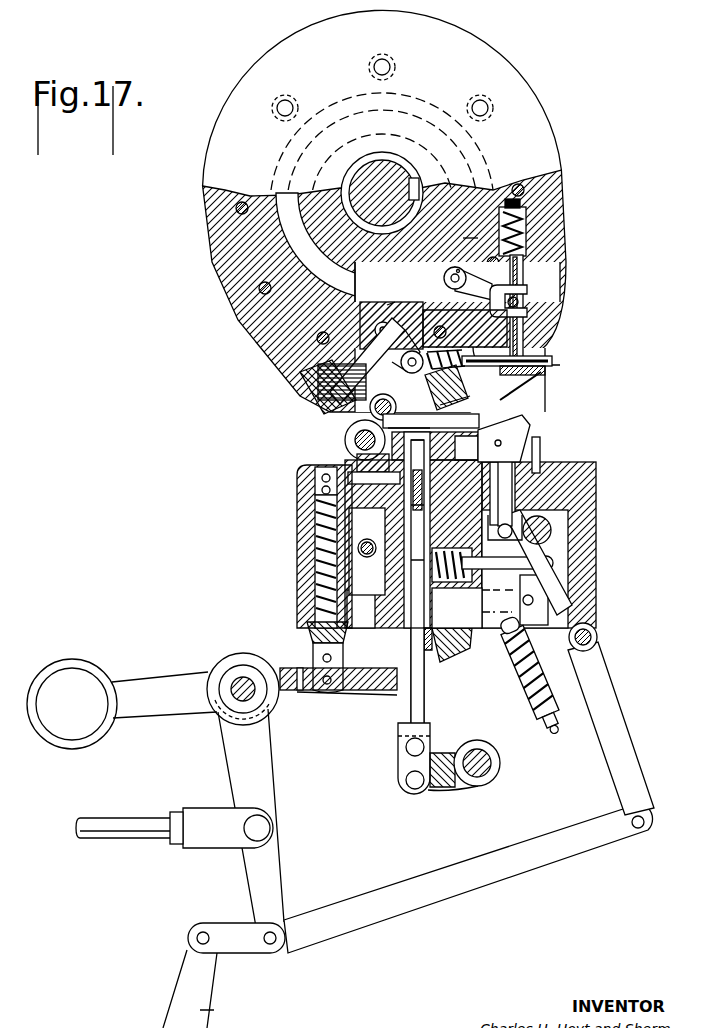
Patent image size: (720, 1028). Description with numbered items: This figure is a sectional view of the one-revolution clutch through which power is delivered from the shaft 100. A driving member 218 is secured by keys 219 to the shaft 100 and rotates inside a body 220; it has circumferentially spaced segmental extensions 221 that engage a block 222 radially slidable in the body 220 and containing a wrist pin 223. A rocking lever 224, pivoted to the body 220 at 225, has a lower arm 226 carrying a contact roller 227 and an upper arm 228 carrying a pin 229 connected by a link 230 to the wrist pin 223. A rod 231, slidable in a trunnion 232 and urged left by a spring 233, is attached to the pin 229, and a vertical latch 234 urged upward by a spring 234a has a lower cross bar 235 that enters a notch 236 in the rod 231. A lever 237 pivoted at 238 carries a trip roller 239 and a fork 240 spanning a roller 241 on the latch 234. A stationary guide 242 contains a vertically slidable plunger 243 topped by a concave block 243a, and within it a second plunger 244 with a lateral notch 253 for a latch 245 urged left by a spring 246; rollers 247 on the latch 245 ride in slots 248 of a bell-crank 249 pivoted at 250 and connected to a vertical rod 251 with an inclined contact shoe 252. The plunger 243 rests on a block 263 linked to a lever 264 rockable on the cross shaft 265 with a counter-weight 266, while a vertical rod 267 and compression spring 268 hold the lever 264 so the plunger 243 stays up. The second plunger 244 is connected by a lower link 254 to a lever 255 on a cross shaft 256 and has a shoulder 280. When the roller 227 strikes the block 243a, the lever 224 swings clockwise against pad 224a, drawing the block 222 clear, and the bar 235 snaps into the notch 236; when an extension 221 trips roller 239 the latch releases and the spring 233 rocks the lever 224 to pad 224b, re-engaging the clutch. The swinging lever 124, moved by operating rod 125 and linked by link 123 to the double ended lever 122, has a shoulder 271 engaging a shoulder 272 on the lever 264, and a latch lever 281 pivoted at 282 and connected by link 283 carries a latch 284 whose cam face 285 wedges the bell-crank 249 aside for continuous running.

The shaft 100 is at (400, 184).
The keys 219 is at (421, 189).
The body 220 is at (206, 236).
The spring 234a is at (530, 237).
The vertical latch 234 is at (522, 322).
The fork 240 is at (528, 291).
The roller 241 is at (520, 300).
The pivot 238 is at (452, 282).
The trip roller 239 is at (460, 262).
The driving member 218 is at (470, 238).
The lever 237 is at (491, 337).
The rod 231 is at (553, 361).
The notch 236 is at (537, 372).
The lower cross bar 235 is at (542, 378).
The link 230 is at (372, 346).
The wrist pin 223 is at (383, 338).
The upper arm 228 is at (398, 372).
The pin 229 is at (410, 372).
The trunnion 232 is at (447, 378).
The spring 233 is at (444, 395).
The second stop pad 224b is at (310, 400).
The pivot 225 is at (370, 406).
The lower arm 226 is at (356, 418).
The contact roller 227 is at (345, 434).
The rocking lever 224 is at (409, 427).
The pad 224a is at (437, 440).
The plunger 243 is at (466, 436).
The concave block 243a is at (356, 456).
The segmental extensions 221 is at (356, 297).
The block 222 is at (395, 305).
The stationary guide 242 is at (573, 463).
The second plunger 244 is at (398, 545).
The latch 245 is at (428, 628).
The lateral notch 253 is at (428, 645).
The block 263 is at (428, 662).
The spring 246 is at (457, 588).
The rollers 247 is at (552, 562).
The slots 248 is at (565, 582).
The bell-crank 249 is at (555, 548).
The pivot 250 is at (550, 522).
The vertical rod 251 is at (537, 440).
The inclined contact shoe 252 is at (506, 428).
The vertical rod 267 is at (300, 520).
The compression spring 268 is at (305, 538).
The shoulder 272 is at (262, 660).
The lever 264 is at (380, 700).
The shoulder 271 is at (222, 712).
The cross shaft 265 is at (248, 680).
The counter-weight 266 is at (63, 742).
The swinging lever 124 is at (270, 748).
The operating rod 125 is at (130, 820).
The link 123 is at (252, 950).
The double ended lever 122 is at (206, 989).
The link 283 is at (488, 882).
The latch lever 281 is at (578, 670).
The pivot 282 is at (594, 638).
The latch 284 is at (506, 643).
The inclined cam face 285 is at (518, 634).
The shoulder 280 is at (426, 722).
The lower link 254 is at (398, 758).
The lever 255 is at (452, 790).
The cross shaft 256 is at (487, 772).